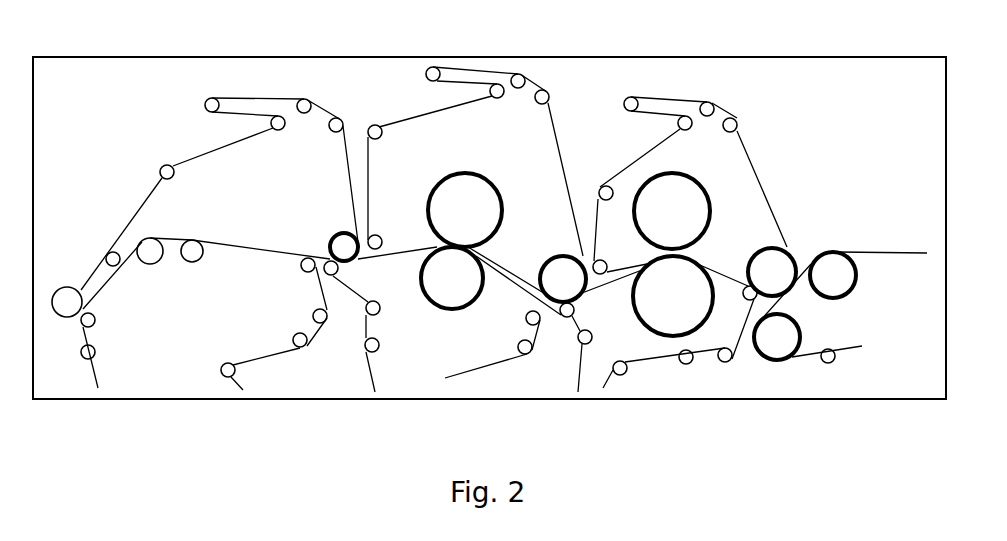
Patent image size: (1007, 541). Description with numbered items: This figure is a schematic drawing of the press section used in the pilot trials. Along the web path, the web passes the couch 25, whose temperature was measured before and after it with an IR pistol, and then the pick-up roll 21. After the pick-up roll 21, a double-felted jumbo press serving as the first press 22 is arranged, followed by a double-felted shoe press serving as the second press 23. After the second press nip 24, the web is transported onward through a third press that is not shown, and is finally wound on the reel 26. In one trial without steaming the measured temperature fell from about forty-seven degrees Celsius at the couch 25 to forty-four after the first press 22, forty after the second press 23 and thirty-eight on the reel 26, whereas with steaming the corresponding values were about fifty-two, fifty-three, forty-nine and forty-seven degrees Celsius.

The pick-up roll 21 is at (788, 245).
The double-felted jumbo press (first press) 22 is at (712, 278).
The double-felted shoe press (second press) 23 is at (477, 258).
The second press nip 24 is at (437, 243).
The couch 25 is at (822, 274).
The reel 26 is at (67, 301).